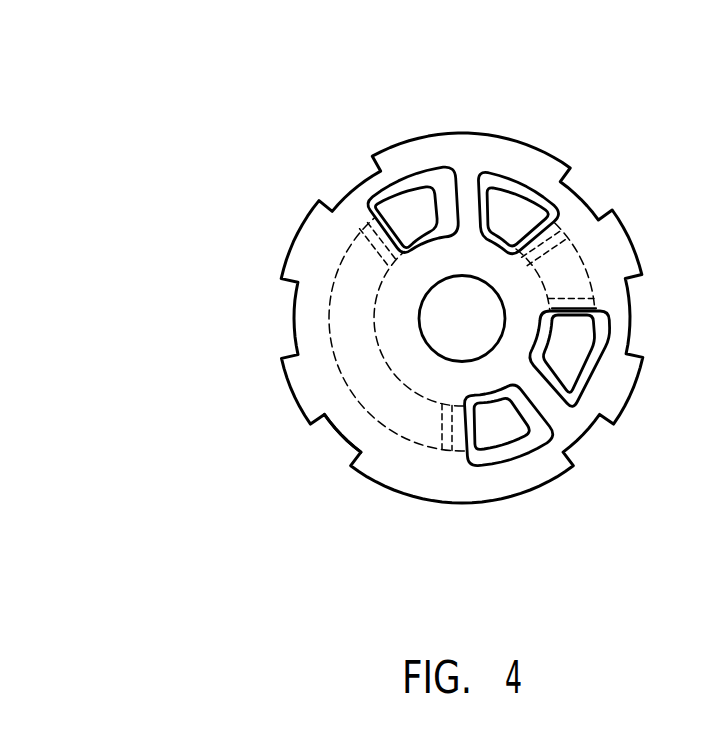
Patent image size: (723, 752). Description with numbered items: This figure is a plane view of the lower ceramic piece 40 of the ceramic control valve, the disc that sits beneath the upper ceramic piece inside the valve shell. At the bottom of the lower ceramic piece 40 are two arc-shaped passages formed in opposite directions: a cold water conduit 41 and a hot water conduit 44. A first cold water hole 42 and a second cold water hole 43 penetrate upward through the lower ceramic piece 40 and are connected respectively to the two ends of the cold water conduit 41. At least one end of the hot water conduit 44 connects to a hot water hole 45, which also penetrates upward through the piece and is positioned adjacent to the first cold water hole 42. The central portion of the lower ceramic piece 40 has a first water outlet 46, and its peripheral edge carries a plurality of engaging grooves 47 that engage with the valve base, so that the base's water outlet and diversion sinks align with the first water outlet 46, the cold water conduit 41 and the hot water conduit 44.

The lower ceramic piece 40 is at (560, 124).
The cold water conduit 41 is at (328, 325).
The first cold water hole 42 is at (500, 452).
The second cold water hole 43 is at (412, 184).
The hot water conduit 44 is at (570, 265).
The hot water hole 45 is at (592, 372).
The first water outlet 46 is at (441, 330).
The engaging grooves 47 is at (340, 445).